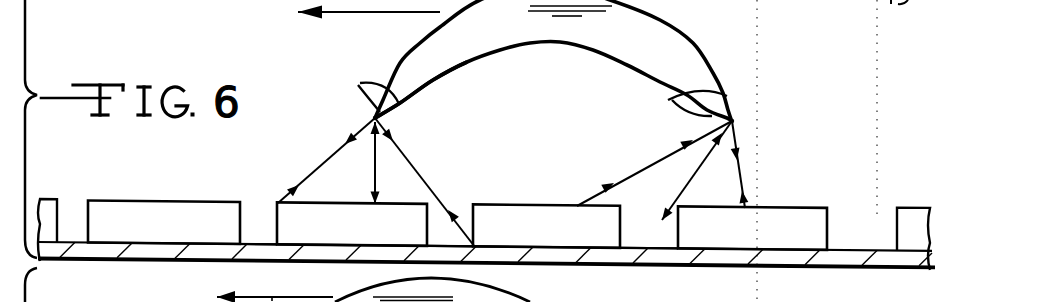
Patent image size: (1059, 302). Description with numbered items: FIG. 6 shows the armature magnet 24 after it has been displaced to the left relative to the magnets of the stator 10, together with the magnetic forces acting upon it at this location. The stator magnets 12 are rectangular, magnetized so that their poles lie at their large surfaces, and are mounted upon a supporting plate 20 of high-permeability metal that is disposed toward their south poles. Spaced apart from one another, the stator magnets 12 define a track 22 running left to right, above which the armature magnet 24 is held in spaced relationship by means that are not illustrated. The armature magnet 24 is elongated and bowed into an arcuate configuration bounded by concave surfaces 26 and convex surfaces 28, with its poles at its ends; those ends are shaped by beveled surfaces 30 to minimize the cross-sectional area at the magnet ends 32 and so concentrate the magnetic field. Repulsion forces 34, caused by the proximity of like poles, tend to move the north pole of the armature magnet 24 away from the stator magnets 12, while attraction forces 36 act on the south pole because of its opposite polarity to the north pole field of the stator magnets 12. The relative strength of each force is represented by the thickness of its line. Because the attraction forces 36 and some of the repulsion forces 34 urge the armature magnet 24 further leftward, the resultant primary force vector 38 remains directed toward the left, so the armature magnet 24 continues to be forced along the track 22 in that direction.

The stator 10 is at (157, 265).
The stator magnets 12 is at (911, 235).
The supporting plate 20 is at (696, 257).
The track 22 is at (157, 182).
The armature magnet 24 is at (485, 34).
The concave surfaces 26 is at (441, 80).
The convex surfaces 28 is at (398, 61).
The beveled surfaces 30 is at (372, 83).
The magnet ends 32 is at (373, 118).
The repulsion forces 34 is at (374, 160).
The attraction forces 36 is at (321, 162).
The primary force vector 38 is at (364, 14).